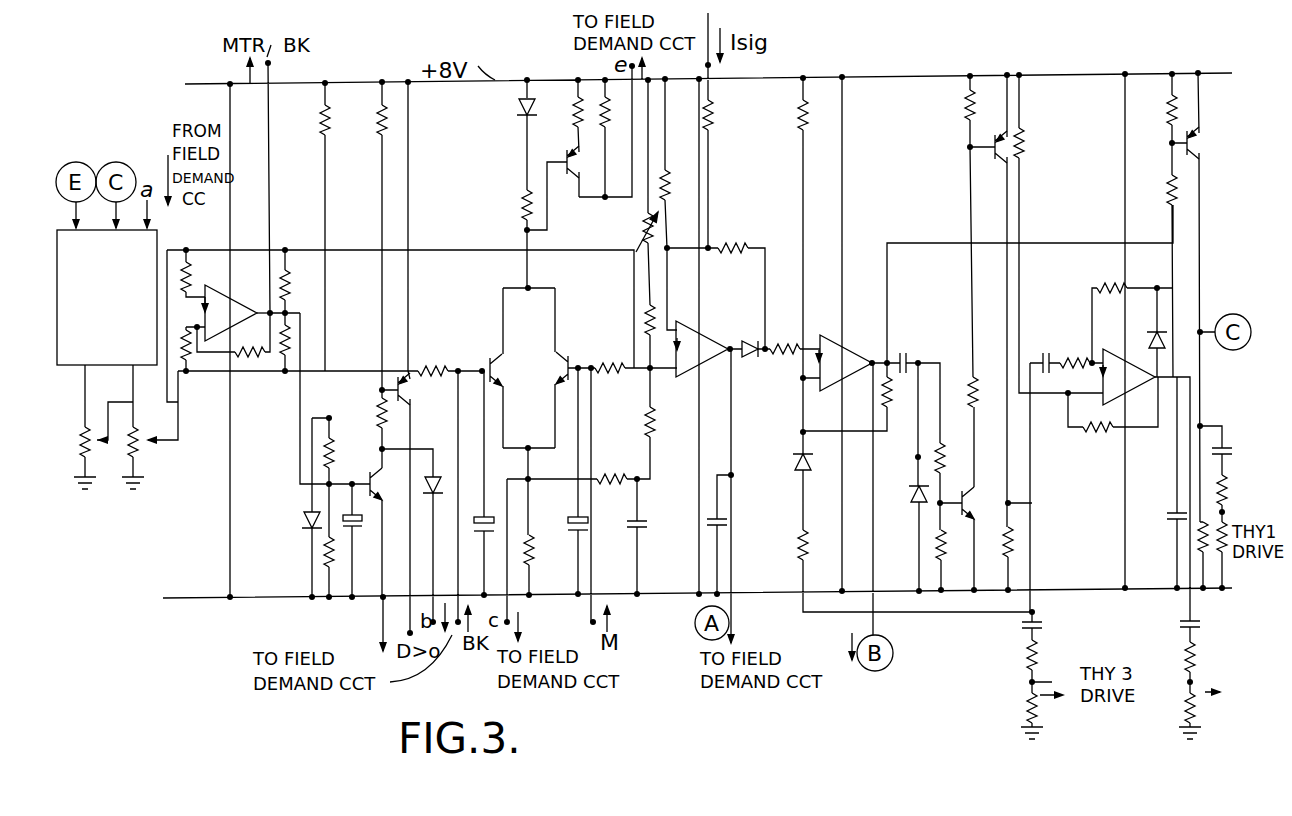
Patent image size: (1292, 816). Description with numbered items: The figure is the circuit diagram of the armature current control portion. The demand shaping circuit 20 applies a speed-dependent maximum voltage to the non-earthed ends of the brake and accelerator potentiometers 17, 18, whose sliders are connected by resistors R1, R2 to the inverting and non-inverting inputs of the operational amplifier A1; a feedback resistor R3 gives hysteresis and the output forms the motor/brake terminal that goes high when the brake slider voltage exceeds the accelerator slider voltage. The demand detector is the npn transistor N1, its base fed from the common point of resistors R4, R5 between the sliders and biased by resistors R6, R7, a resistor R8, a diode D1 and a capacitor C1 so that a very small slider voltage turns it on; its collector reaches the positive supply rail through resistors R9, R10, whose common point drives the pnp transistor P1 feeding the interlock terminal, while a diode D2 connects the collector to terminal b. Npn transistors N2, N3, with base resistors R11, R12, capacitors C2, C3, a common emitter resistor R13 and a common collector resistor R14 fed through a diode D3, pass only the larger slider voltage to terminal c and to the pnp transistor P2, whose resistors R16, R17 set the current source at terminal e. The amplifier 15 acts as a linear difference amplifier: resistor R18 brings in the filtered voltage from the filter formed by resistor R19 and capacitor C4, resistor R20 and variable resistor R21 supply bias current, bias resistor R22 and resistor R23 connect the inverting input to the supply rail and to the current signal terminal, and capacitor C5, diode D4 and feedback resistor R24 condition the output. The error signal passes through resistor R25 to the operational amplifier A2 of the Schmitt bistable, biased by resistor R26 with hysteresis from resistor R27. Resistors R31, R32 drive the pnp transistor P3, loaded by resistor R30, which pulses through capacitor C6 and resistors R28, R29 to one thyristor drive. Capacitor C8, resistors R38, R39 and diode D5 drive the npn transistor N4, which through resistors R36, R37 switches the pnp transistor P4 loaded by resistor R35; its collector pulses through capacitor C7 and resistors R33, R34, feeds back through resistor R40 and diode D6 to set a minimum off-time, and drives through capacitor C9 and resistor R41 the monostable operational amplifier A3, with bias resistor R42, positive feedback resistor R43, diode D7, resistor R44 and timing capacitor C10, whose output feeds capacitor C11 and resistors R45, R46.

The demand shaping circuit 20 is at (110, 352).
The potentiometer 17 is at (87, 452).
The potentiometer 18 is at (140, 455).
The amplifier 15 is at (704, 354).
The operational amplifier A1 is at (238, 308).
The operational amplifier A2 is at (849, 360).
The operational amplifier A3 is at (1131, 380).
The resistor R1 is at (192, 266).
The resistor R2 is at (192, 356).
The feedback resistor R3 is at (252, 340).
The resistor R4 is at (290, 280).
The resistor R5 is at (281, 362).
The resistor R6 is at (333, 448).
The resistor R7 is at (322, 118).
The resistor R8 is at (334, 558).
The resistor R9 is at (376, 416).
The resistor R10 is at (378, 118).
The resistor R11 is at (432, 364).
The resistor R12 is at (616, 357).
The common resistor R13 is at (538, 546).
The common resistor R14 is at (518, 208).
The resistor R16 is at (575, 110).
The resistor R17 is at (603, 128).
The resistor R18 is at (650, 426).
The resistor R19 is at (616, 488).
The resistor R20 is at (646, 338).
The variable resistor R21 is at (640, 233).
The bias resistor R22 is at (672, 186).
The resistor R23 is at (716, 118).
The feedback resistor R24 is at (730, 244).
The resistor R25 is at (788, 362).
The bias resistor R26 is at (806, 118).
The resistor R27 is at (892, 413).
The resistor R28 is at (1228, 492).
The resistor R29 is at (1224, 553).
The load resistor R30 is at (1207, 555).
The resistor R31 is at (1162, 101).
The resistor R32 is at (1162, 190).
The resistor R33 is at (1027, 720).
The resistor R34 is at (1027, 667).
The load resistor R35 is at (1003, 546).
The resistor R36 is at (963, 103).
The resistor R37 is at (977, 381).
The resistor R38 is at (950, 548).
The resistor R39 is at (948, 457).
The resistor R40 is at (801, 546).
The resistor R41 is at (1077, 355).
The bias resistor R42 is at (1027, 146).
The positive feedback resistor R43 is at (1097, 433).
The resistor R44 is at (1102, 282).
The resistor R45 is at (1182, 652).
The resistor R46 is at (1183, 712).
The capacitor C1 is at (363, 528).
The capacitor C2 is at (490, 512).
The capacitor C3 is at (570, 519).
The capacitor C4 is at (647, 532).
The capacitor C5 is at (717, 486).
The capacitor C6 is at (1230, 452).
The capacitor C7 is at (1047, 626).
The capacitor C8 is at (905, 355).
The capacitor C9 is at (1045, 357).
The capacitor C10 is at (1167, 518).
The capacitor C11 is at (1182, 623).
The diode D1 is at (307, 527).
The diode D2 is at (439, 496).
The diode D3 is at (518, 107).
The diode D4 is at (750, 340).
The diode D5 is at (917, 508).
The diode D6 is at (799, 466).
The diode D7 is at (1155, 330).
The npn transistor N1 is at (392, 486).
The npn transistor N2 is at (503, 380).
The npn transistor N3 is at (562, 375).
The npn transistor N4 is at (984, 483).
The pnp transistor P1 is at (412, 396).
The pnp transistor P2 is at (566, 172).
The pnp transistor P3 is at (1198, 140).
The pnp transistor P4 is at (992, 150).